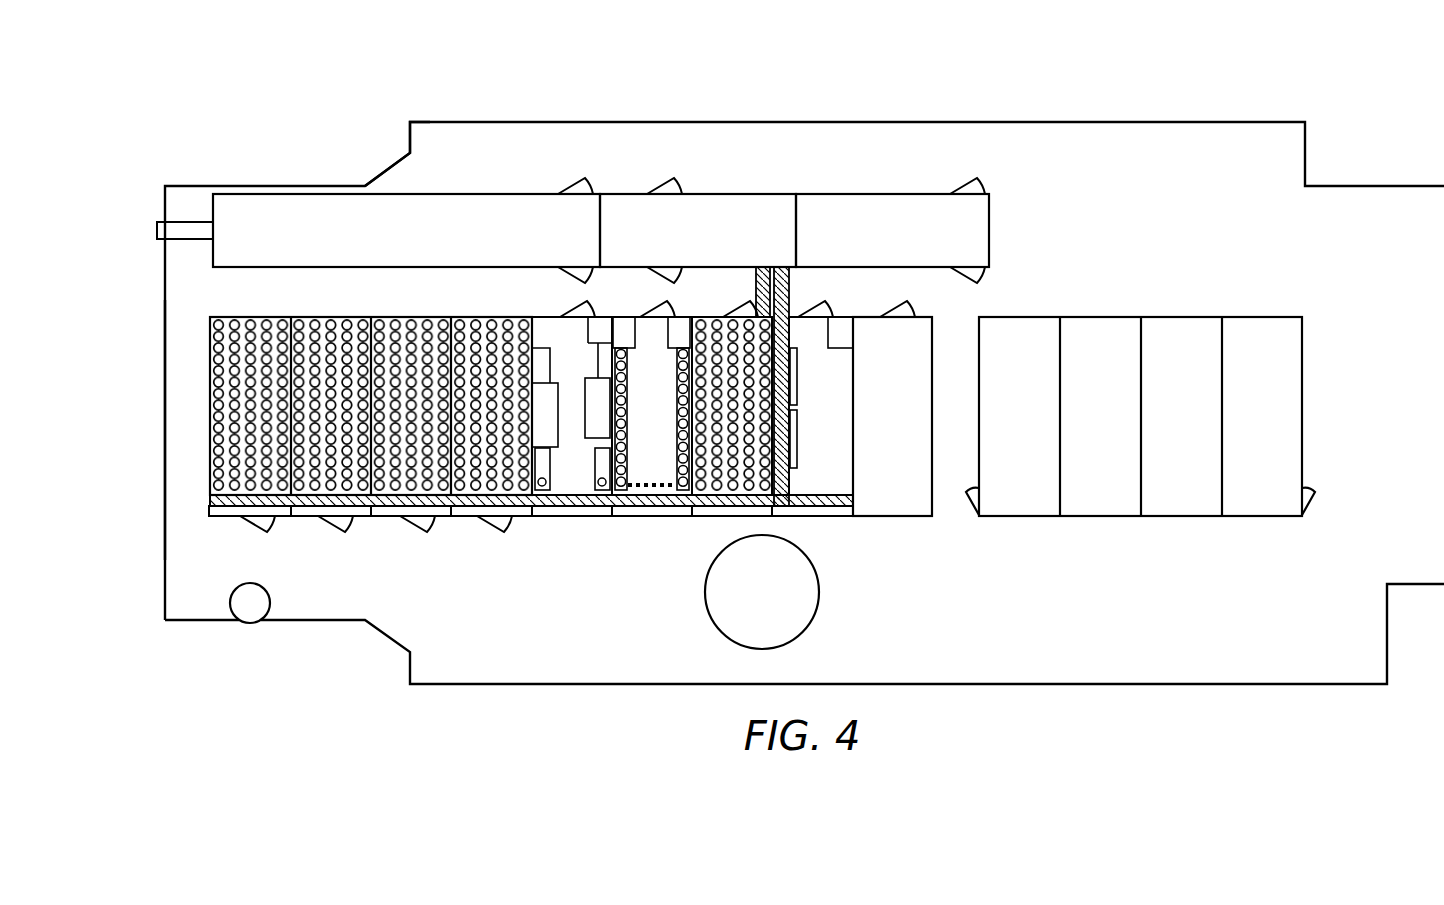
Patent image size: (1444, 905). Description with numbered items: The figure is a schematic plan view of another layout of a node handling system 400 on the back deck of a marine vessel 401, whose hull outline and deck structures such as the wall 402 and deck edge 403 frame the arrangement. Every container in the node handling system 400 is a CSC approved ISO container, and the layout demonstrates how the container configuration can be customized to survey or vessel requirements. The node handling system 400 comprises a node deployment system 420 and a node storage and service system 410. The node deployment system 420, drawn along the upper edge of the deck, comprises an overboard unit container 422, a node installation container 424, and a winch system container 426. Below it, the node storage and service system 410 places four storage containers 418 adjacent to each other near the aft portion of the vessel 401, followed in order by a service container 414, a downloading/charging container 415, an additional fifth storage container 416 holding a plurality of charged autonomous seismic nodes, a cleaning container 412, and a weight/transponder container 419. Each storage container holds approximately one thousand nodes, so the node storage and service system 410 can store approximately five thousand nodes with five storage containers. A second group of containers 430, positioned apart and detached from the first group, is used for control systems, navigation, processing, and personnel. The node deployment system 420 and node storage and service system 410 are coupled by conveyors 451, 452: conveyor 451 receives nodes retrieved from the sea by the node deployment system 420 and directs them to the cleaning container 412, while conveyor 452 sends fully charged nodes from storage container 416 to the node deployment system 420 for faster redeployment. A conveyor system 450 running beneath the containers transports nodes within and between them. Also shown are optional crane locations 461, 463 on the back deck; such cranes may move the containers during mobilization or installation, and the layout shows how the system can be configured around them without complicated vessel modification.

The node handling system 400 is at (771, 397).
The marine vessel 401 is at (420, 146).
The housing side wall 402 is at (165, 432).
The housing 403 is at (798, 121).
The node storage and service system 410 is at (599, 425).
The cleaning container 412 is at (808, 492).
The service container 414 is at (572, 490).
The downloading/charging container 415 is at (650, 498).
The fifth storage container 416 is at (724, 495).
The storage containers 418 is at (262, 490).
The weight/transponder container 419 is at (892, 408).
The node deployment system 420 is at (634, 230).
The overboard unit container 422 is at (406, 230).
The node installation container 424 is at (698, 230).
The winch system container 426 is at (892, 230).
The second group of containers 430 is at (1300, 536).
The conveyor system 450 is at (525, 500).
The conveyor 451 is at (790, 293).
The conveyor 452 is at (756, 293).
The crane location 461 is at (705, 591).
The crane location 463 is at (271, 591).